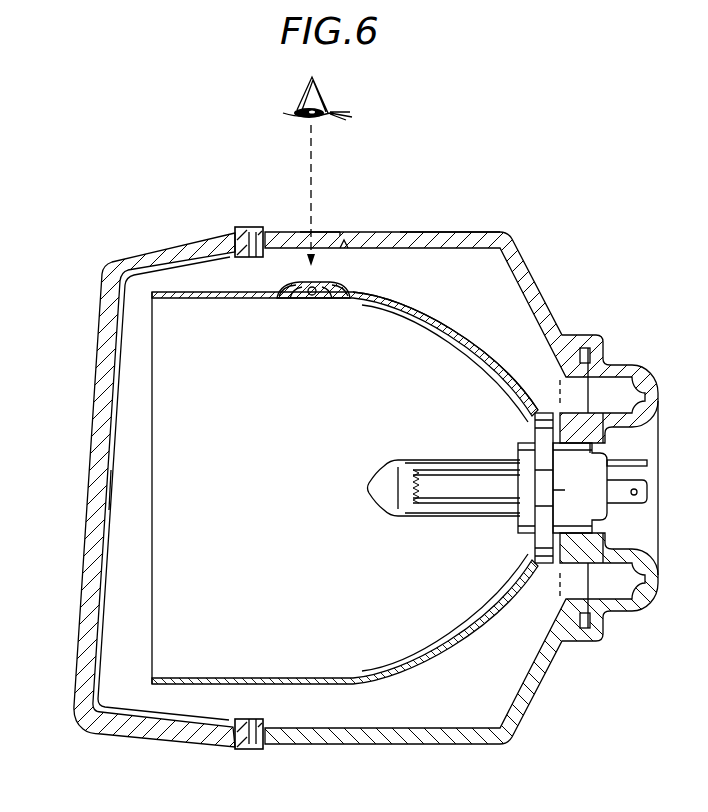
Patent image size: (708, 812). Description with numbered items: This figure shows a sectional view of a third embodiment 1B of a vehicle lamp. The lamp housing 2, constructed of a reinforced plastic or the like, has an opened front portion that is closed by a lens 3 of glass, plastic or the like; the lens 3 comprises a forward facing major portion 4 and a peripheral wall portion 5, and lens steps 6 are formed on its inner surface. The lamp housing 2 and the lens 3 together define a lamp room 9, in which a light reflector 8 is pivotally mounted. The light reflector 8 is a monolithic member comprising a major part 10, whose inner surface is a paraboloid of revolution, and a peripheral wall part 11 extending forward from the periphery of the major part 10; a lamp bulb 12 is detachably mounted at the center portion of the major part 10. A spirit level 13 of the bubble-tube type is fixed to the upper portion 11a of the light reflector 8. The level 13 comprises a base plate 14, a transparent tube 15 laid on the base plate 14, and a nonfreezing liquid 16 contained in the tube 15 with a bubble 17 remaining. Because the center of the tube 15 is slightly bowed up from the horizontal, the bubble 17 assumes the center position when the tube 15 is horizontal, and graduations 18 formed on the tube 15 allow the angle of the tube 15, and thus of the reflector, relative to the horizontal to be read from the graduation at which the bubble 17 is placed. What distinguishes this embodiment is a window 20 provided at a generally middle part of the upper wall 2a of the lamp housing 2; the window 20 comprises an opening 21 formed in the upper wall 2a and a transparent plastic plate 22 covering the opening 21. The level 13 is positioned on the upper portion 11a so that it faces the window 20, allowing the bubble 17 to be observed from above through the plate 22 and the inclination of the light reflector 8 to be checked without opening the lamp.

The third embodiment 1B is at (569, 192).
The lamp housing 2 is at (481, 233).
The upper wall 2a is at (431, 231).
The lens 3 is at (50, 243).
The forward facing major portion 4 is at (107, 311).
The peripheral wall portion 5 is at (148, 255).
The lens steps 6 is at (115, 492).
The light reflector 8 is at (437, 326).
The lamp room 9 is at (500, 338).
The major part 10 is at (467, 352).
The peripheral wall part 11 is at (268, 685).
The upper portion 11a is at (195, 302).
The lamp bulb 12 is at (429, 459).
The spirit level 13 is at (350, 290).
The base plate 14 is at (279, 284).
The transparent tube 15 is at (331, 282).
The nonfreezing liquid 16 is at (342, 299).
The bubble 17 is at (316, 299).
The graduations 18 is at (284, 300).
The window 20 is at (325, 232).
The opening 21 is at (340, 232).
The transparent plastic plate 22 is at (290, 231).